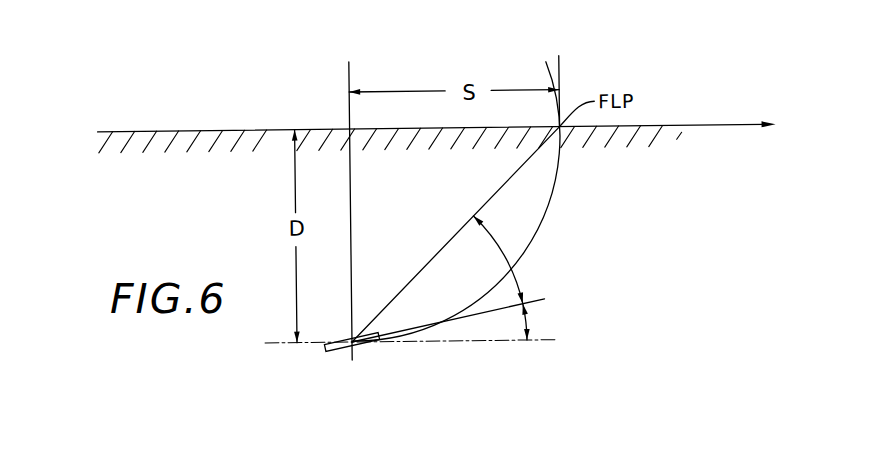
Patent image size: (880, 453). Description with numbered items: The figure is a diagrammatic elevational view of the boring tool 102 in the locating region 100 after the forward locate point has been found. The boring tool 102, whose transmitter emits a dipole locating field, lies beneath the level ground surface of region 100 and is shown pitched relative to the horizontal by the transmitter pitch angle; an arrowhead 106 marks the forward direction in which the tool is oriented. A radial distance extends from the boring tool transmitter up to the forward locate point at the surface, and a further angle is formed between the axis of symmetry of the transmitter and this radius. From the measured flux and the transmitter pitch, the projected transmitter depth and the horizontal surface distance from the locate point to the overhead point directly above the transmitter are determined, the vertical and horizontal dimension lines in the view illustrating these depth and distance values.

The region 100 is at (677, 227).
The boring tool 102 is at (333, 350).
The arrowhead 106 is at (730, 129).